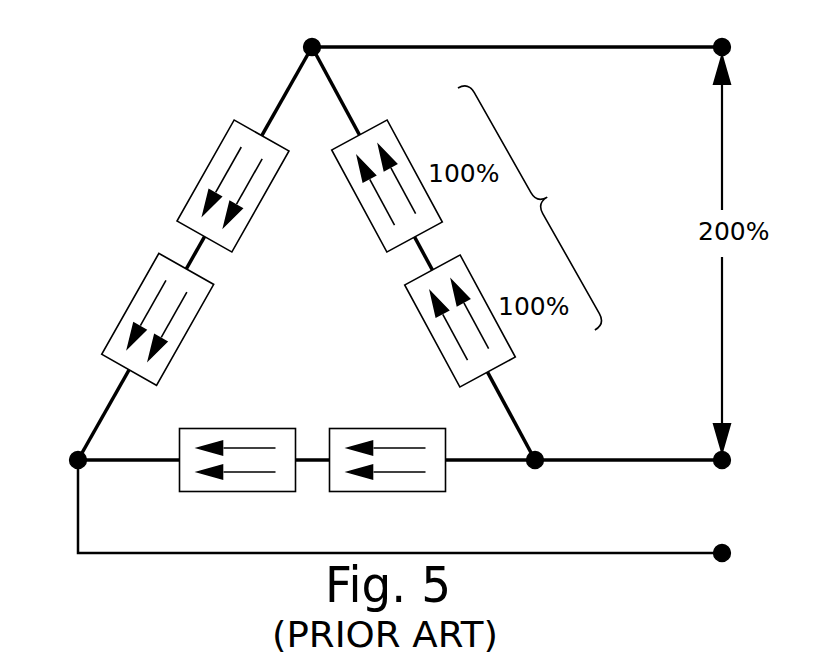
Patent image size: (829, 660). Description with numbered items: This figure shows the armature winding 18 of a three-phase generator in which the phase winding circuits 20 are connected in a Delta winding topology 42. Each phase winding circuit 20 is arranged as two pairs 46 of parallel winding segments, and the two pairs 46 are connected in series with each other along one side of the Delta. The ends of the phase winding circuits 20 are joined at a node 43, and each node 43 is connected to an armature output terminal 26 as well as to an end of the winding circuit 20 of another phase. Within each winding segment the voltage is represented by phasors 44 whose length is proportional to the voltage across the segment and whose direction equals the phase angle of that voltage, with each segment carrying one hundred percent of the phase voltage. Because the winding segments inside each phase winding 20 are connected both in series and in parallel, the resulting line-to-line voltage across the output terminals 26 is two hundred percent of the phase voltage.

The armature winding 18 is at (135, 182).
The phase winding circuit 20 is at (537, 203).
The output terminal 26 is at (728, 43).
The Delta winding topology 42 is at (328, 317).
The node 43 is at (320, 42).
The phasor 44 is at (396, 167).
The pair of parallel winding segments 46 is at (439, 217).